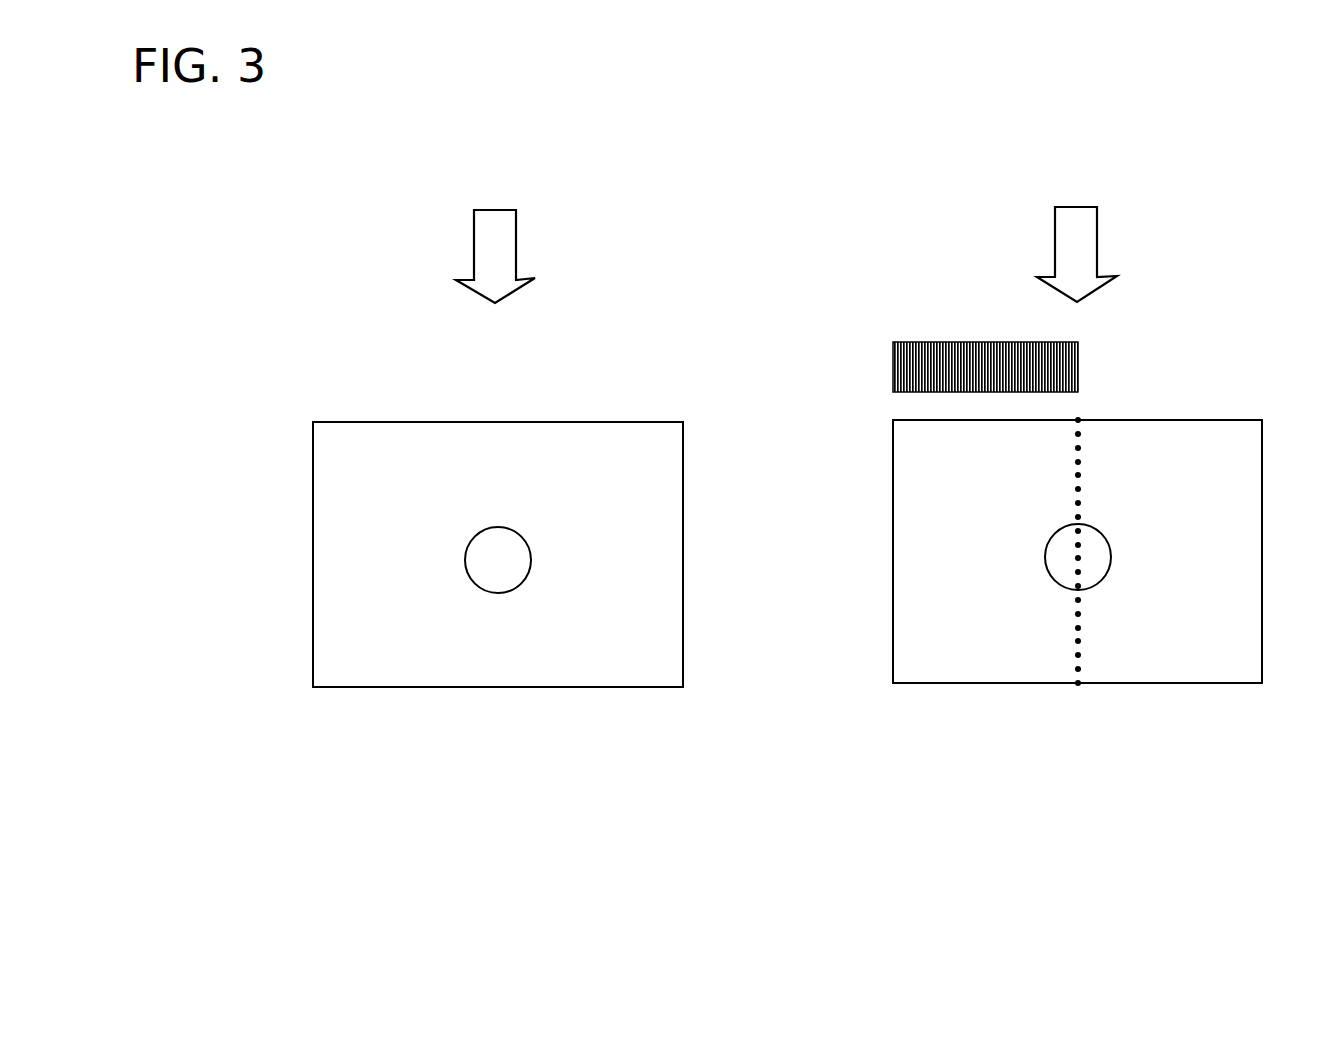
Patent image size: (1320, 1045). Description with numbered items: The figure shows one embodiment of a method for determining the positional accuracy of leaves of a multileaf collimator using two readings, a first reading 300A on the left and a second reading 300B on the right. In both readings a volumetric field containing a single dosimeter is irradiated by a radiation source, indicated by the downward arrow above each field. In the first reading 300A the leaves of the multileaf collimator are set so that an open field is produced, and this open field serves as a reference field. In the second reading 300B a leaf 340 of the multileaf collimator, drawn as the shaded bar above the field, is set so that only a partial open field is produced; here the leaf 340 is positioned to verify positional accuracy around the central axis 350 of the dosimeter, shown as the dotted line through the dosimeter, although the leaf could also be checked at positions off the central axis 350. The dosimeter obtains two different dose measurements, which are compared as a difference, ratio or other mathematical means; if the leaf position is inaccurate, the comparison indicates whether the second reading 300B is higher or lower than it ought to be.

The first reading 300A is at (328, 770).
The second reading 300B is at (900, 768).
The leaf 340 is at (893, 365).
The central axis 350 is at (1076, 472).